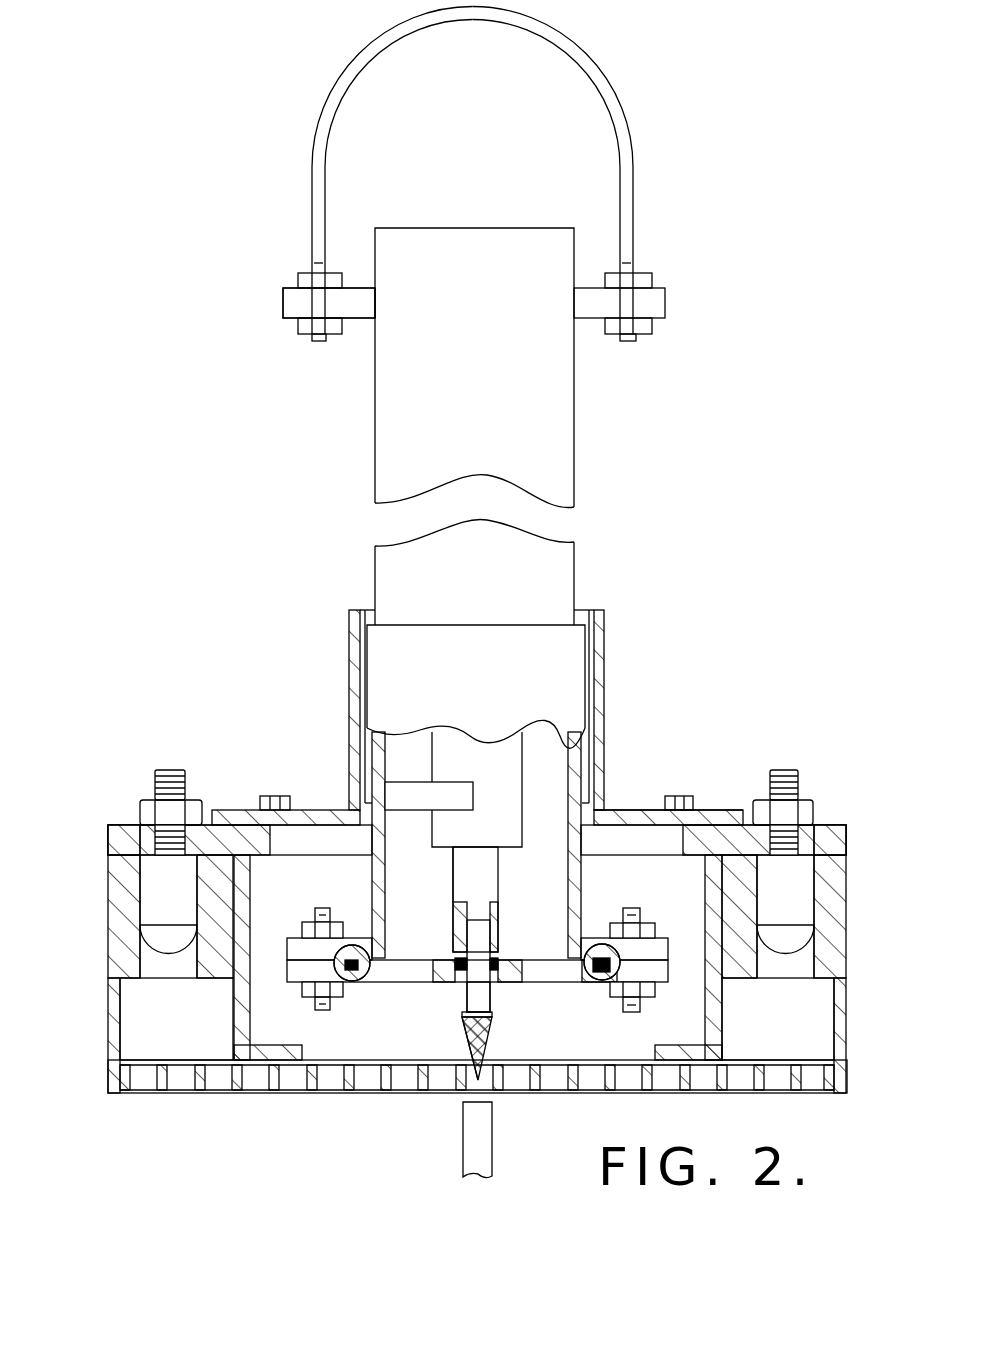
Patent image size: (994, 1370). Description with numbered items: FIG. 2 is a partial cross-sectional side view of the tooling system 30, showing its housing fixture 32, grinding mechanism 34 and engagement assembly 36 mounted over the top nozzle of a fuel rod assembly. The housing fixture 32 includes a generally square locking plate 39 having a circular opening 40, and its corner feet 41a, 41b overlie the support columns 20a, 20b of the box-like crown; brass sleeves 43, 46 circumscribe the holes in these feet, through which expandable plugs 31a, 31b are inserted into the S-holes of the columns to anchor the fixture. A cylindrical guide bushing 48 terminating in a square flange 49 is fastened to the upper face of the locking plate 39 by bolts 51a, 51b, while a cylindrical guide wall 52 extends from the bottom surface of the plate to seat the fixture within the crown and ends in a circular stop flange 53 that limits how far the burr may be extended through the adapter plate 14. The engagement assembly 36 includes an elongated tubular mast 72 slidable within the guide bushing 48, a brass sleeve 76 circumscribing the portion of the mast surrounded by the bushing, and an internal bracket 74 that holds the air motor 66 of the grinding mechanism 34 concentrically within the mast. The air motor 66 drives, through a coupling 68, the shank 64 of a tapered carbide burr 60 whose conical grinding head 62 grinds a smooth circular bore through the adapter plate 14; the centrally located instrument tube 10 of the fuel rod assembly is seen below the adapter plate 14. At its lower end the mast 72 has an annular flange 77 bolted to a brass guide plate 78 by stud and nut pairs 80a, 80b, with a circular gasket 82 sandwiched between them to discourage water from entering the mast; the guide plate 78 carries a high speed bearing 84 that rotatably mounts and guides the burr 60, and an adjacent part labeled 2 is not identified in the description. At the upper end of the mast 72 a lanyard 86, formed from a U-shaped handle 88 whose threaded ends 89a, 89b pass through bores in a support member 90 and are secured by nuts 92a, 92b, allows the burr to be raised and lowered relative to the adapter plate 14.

The tooling system 30 is at (268, 170).
The lanyard 86 is at (330, 100).
The U-shaped handle 88 is at (616, 106).
The nut 92a is at (298, 279).
The nut 92b is at (652, 279).
The threaded end 89a is at (318, 341).
The threaded end 89b is at (628, 342).
The support member 90 is at (357, 312).
The tubular mast 72 is at (490, 400).
The housing fixture 32 is at (336, 671).
The engagement assembly 36 is at (375, 600).
The cylindrical guide bushing 48 is at (604, 670).
The brass sleeve 76 is at (494, 700).
The bracket 74 is at (418, 800).
The air motor 66 is at (492, 840).
The grinding mechanism 34 is at (455, 882).
The coupling 68 is at (480, 875).
The high speed bearing 84 is at (495, 952).
The foot 41a is at (230, 815).
The foot 41b is at (833, 837).
The square flange 49 is at (648, 818).
The locking plate 39 is at (108, 830).
The brass sleeve 43 is at (130, 825).
The circular opening 40 is at (682, 842).
The brass sleeve 46 is at (812, 830).
The expandable plug 31a is at (183, 770).
The expandable plug 31b is at (773, 770).
The bolt 51a is at (270, 800).
The bolt 51b is at (686, 808).
The support column 20a is at (110, 963).
The support column 20b is at (845, 987).
The cylindrical guide wall 52 is at (250, 932).
The circular stop flange 53 is at (275, 1047).
The adapter plate 14 is at (553, 1080).
The annular flange 77 is at (357, 937).
The brass guide plate 78 is at (402, 972).
The plate 2 is at (557, 983).
The shank 64 is at (473, 993).
The circular gasket 82 is at (355, 982).
The stud and nut pair 80a is at (302, 922).
The stud and nut pair 80b is at (655, 923).
The tapered carbide burr 60 is at (488, 1037).
The conical grinding head 62 is at (467, 1038).
The instrument tube 10 is at (480, 1148).